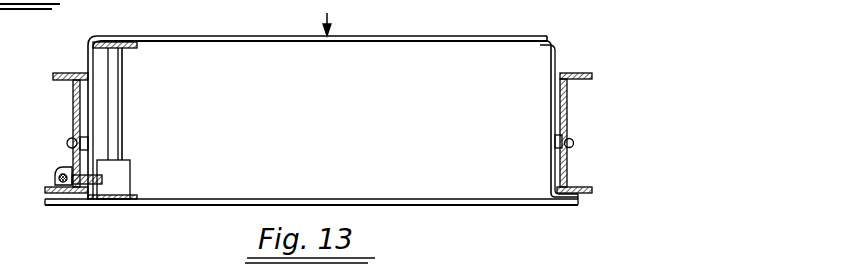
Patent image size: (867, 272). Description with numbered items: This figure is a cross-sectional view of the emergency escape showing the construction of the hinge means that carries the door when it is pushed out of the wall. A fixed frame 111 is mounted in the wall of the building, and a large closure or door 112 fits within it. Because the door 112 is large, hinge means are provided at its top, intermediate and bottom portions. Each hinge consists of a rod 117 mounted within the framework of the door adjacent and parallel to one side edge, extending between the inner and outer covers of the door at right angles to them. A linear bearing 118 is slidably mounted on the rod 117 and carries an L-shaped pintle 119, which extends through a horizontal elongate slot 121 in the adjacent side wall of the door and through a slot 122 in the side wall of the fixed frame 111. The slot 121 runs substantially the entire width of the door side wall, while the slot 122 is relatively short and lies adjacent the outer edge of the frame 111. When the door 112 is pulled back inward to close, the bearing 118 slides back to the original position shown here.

The fixed frame 111 is at (568, 103).
The closure 112 is at (549, 26).
The rod 117 is at (113, 103).
The linear bearing 118 is at (131, 172).
The L-shaped pintle 119 is at (70, 173).
The horizontal elongate slot 121 is at (92, 74).
The slot 122 is at (60, 201).